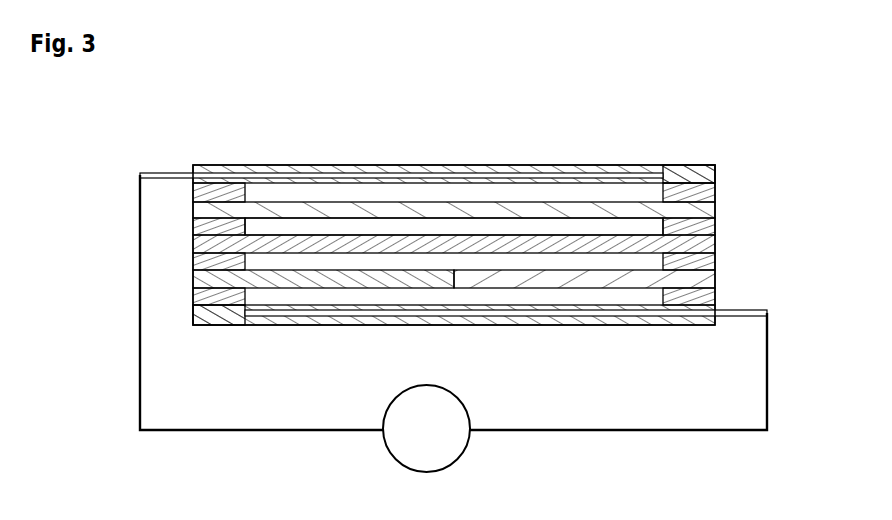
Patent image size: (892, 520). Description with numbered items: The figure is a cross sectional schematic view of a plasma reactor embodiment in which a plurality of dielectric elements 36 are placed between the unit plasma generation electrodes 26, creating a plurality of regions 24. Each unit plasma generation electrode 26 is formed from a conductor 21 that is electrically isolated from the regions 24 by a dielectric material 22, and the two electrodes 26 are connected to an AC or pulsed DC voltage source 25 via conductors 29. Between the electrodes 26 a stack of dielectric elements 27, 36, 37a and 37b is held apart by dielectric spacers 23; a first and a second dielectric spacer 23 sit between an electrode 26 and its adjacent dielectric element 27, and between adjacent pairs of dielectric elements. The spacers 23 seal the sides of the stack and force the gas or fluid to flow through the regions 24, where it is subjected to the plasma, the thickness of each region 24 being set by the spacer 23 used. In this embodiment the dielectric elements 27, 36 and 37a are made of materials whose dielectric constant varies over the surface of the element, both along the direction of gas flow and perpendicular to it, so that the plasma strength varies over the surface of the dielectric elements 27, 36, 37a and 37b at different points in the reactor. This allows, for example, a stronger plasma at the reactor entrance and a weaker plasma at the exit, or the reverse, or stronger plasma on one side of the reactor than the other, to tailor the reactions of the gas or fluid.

The conductor 21 is at (157, 173).
The dielectric material 22 is at (693, 165).
The dielectric spacer 23 is at (687, 200).
The plasma-discharge region 24 is at (640, 228).
The AC or pulsed DC voltage source 25 is at (458, 438).
The unit plasma generation electrode 26 is at (455, 165).
The dielectric element 27 is at (200, 212).
The conductor 29 is at (157, 432).
The dielectric element 36 is at (705, 243).
The dielectric element 37a is at (200, 281).
The dielectric element 37b is at (698, 280).